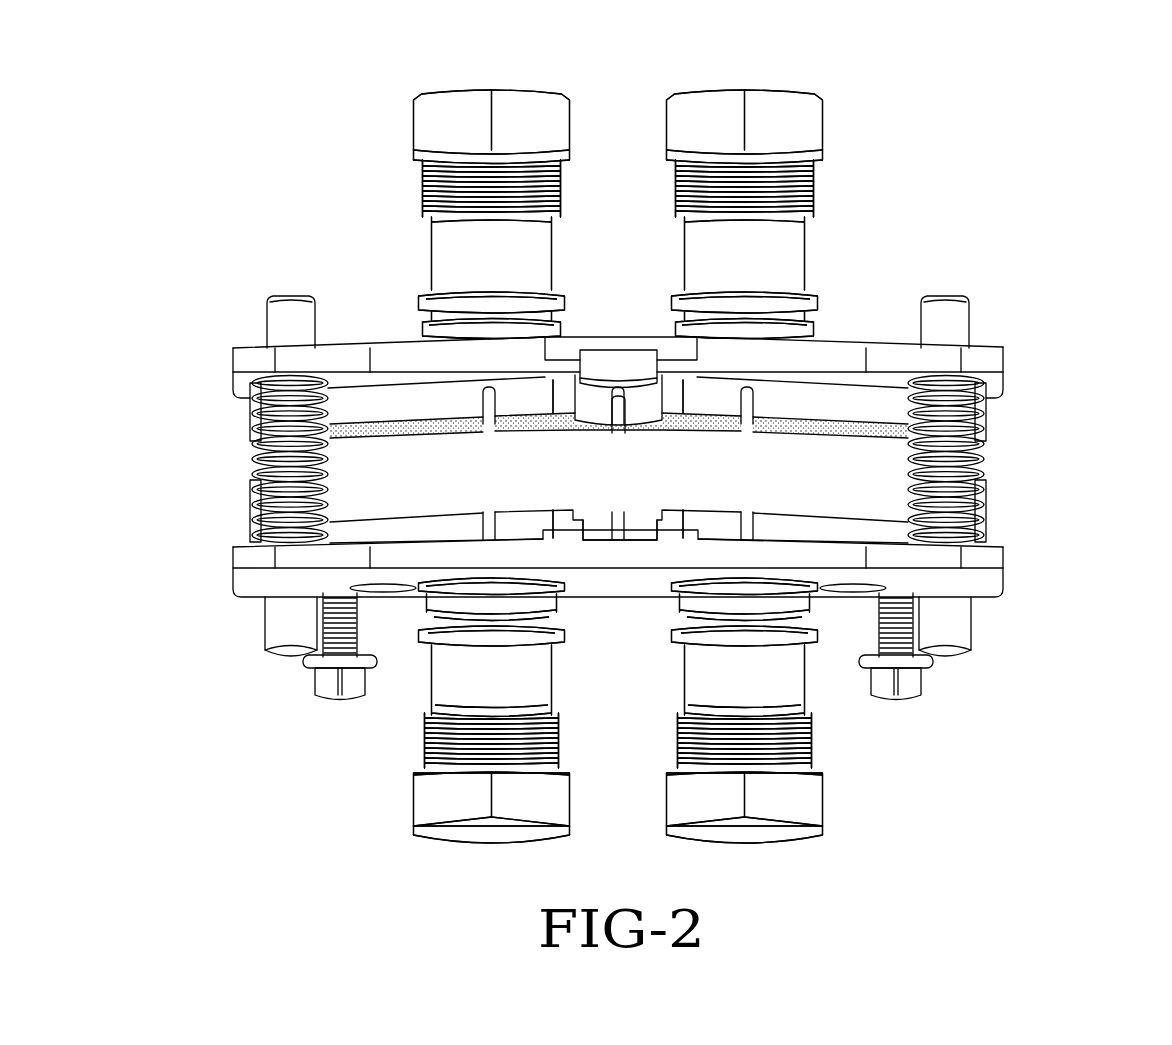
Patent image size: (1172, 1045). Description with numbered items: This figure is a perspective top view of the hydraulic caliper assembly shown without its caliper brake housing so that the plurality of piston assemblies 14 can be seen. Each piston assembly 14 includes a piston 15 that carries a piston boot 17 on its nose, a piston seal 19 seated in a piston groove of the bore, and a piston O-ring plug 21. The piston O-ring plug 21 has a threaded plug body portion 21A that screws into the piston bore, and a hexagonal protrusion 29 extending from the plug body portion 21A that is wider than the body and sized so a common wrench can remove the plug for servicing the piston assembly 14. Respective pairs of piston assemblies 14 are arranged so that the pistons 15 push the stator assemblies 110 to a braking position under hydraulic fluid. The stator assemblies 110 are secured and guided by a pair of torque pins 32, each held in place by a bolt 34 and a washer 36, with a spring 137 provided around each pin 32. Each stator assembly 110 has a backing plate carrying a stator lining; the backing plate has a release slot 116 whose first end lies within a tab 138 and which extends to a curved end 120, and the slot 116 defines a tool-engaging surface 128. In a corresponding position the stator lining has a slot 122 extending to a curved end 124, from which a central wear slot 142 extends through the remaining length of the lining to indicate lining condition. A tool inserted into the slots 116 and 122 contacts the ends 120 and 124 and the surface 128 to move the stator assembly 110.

The piston assembly 14 is at (418, 206).
The piston 15 is at (452, 268).
The piston boot 17 is at (432, 330).
The piston seal 19 is at (430, 298).
The piston O-ring plug 21 is at (402, 93).
The plug body portion 21A is at (462, 181).
The protrusion 29 is at (468, 115).
The torque pin 32 is at (288, 608).
The bolt 34 is at (340, 695).
The washer 36 is at (312, 667).
The stator assembly 110 is at (1008, 356).
The slot 116 is at (660, 383).
The end 120 is at (604, 380).
The slot 122 is at (651, 515).
The end 124 is at (597, 515).
The tool-engaging surface 128 is at (626, 368).
The spring 137 is at (262, 478).
The tab 138 is at (668, 342).
The central wear slot 142 is at (490, 512).